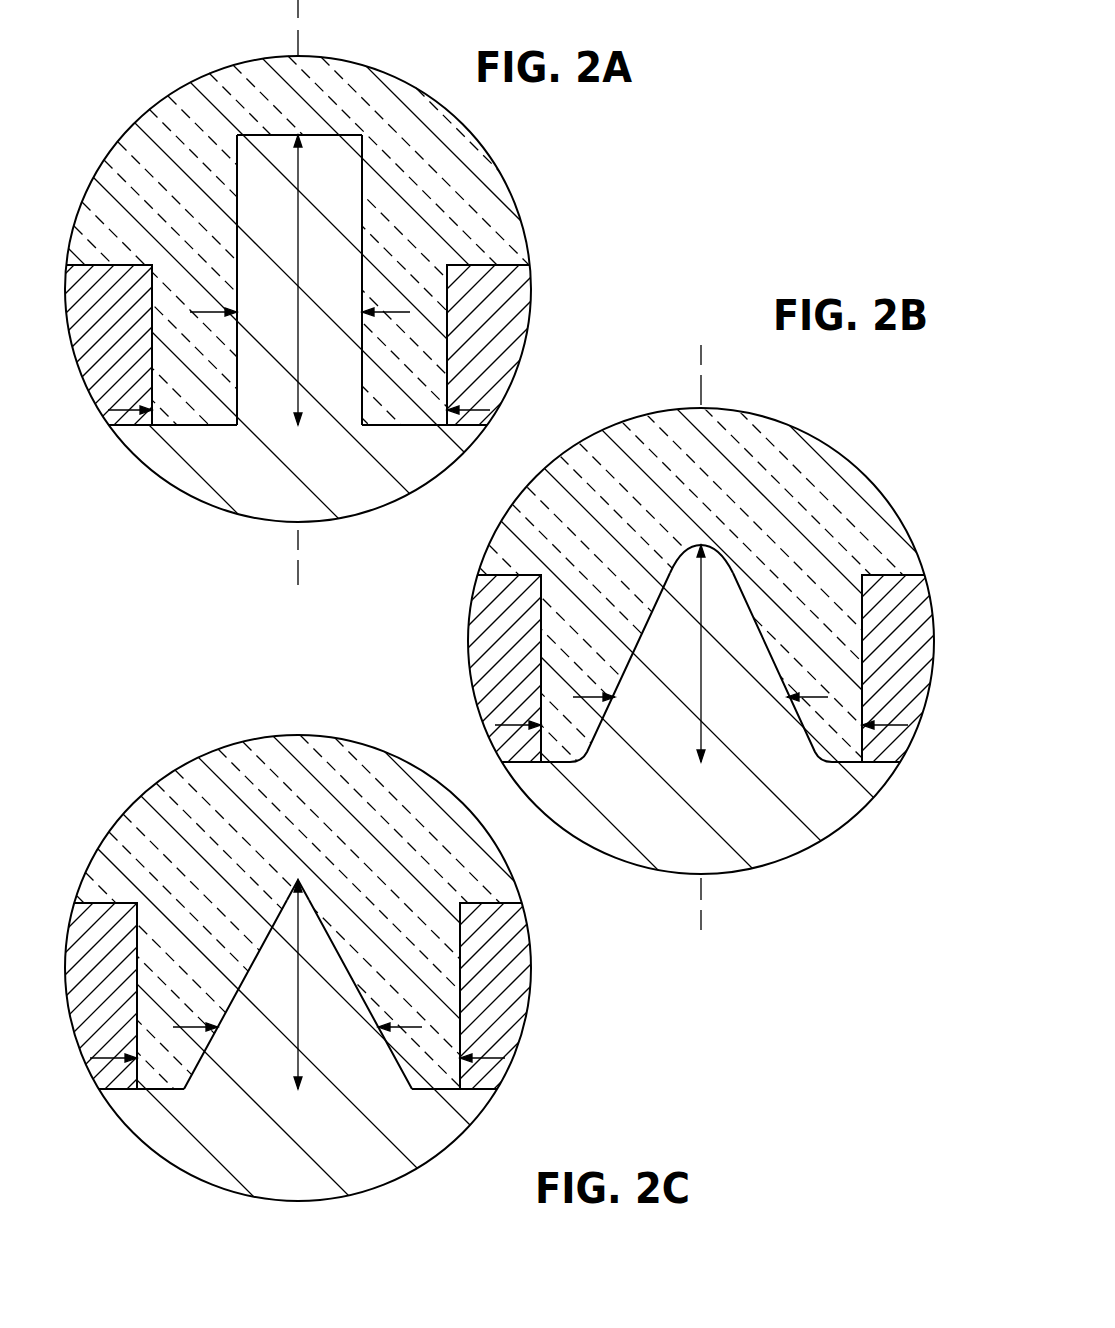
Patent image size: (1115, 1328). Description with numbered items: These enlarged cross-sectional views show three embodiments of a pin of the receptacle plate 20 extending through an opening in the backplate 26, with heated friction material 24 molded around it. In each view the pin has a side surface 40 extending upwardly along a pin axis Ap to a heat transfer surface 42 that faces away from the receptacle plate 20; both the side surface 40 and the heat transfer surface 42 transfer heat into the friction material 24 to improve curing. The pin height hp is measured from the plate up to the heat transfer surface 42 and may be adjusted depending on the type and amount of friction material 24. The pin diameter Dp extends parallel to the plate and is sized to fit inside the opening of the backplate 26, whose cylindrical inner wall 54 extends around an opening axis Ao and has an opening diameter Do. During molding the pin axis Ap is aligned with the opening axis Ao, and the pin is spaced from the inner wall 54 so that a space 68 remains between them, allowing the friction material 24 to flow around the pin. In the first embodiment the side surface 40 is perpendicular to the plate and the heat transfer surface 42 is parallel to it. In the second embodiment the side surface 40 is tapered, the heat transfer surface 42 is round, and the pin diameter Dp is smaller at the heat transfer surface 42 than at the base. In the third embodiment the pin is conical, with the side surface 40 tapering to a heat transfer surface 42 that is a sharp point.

In FIG. 2A, the receptacle plate 20 is at (362, 518).
In FIG. 2B, the receptacle plate 20 is at (748, 875).
In FIG. 2C, the receptacle plate 20 is at (388, 1190).
In FIG. 2A, the friction material 24 is at (357, 80).
In FIG. 2B, the friction material 24 is at (767, 428).
In FIG. 2C, the friction material 24 is at (322, 745).
In FIG. 2A, the backplate 26 is at (536, 307).
In FIG. 2B, the backplate 26 is at (917, 740).
In FIG. 2C, the backplate 26 is at (530, 1008).
In FIG. 2A, the side surface 40 is at (380, 202).
In FIG. 2B, the side surface 40 is at (750, 607).
In FIG. 2C, the side surface 40 is at (333, 945).
In FIG. 2A, the heat transfer surface 42 is at (245, 130).
In FIG. 2B, the heat transfer surface 42 is at (701, 542).
In FIG. 2C, the heat transfer surface 42 is at (297, 878).
In FIG. 2A, the inner wall 54 is at (152, 288).
In FIG. 2B, the inner wall 54 is at (545, 612).
In FIG. 2C, the inner wall 54 is at (140, 932).
In FIG. 2A, the space 68 is at (207, 287).
In FIG. 2B, the space 68 is at (599, 661).
In FIG. 2C, the space 68 is at (195, 992).
In FIG. 2A, the pin diameter Dp is at (388, 312).
In FIG. 2B, the pin diameter Dp is at (583, 697).
In FIG. 2C, the pin diameter Dp is at (390, 1027).
In FIG. 2A, the opening diameter Do is at (470, 410).
In FIG. 2B, the opening diameter Do is at (512, 724).
In FIG. 2C, the opening diameter Do is at (490, 1060).
In FIG. 2A, the pin height hp is at (298, 389).
In FIG. 2B, the pin height hp is at (700, 731).
In FIG. 2C, the pin height hp is at (292, 1066).
In FIG. 2A, the opening axis Ao is at (299, 24).
In FIG. 2B, the opening axis Ao is at (702, 370).
In FIG. 2A, the pin axis Ap is at (296, 555).
In FIG. 2B, the pin axis Ap is at (696, 905).